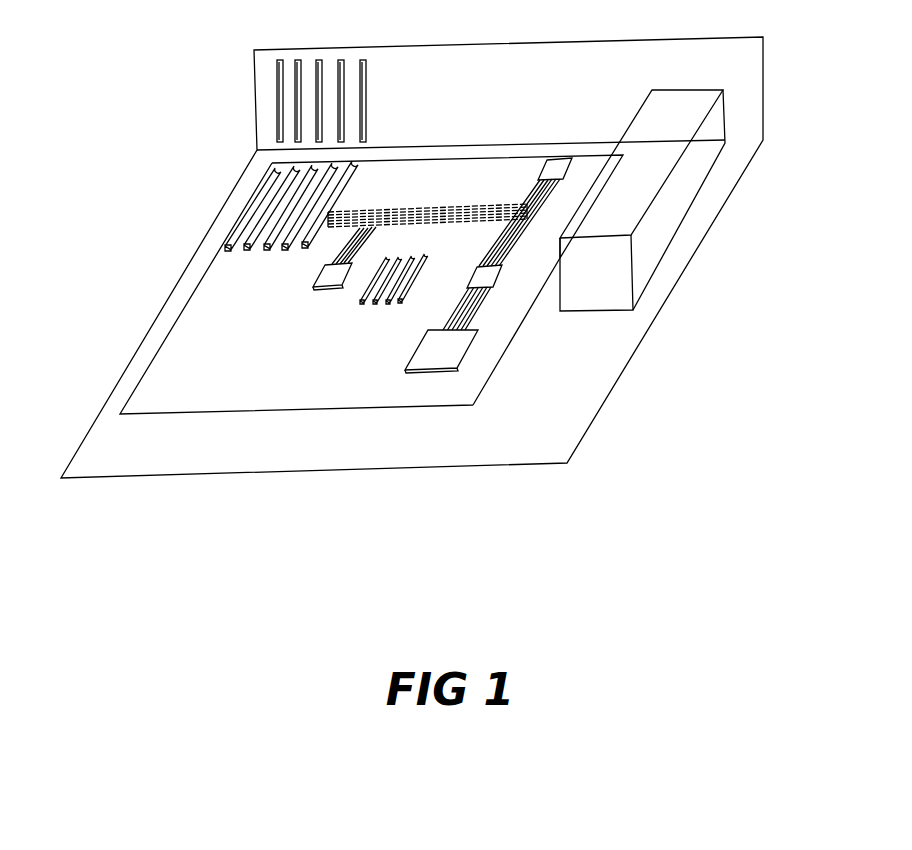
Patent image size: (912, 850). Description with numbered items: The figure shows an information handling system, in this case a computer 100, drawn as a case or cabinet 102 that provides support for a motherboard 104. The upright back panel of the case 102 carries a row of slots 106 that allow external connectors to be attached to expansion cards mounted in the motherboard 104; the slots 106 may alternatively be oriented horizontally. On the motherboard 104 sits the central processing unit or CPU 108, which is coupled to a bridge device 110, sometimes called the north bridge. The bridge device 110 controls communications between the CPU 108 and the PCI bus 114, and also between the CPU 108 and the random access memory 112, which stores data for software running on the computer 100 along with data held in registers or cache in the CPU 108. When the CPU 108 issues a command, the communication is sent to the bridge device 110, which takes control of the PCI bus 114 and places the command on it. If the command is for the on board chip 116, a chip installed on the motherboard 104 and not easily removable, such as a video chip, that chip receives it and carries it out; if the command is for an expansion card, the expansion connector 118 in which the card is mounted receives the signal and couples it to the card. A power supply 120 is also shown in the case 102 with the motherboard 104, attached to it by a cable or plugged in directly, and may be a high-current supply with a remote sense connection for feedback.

The computer 100 is at (120, 55).
The case 102 is at (747, 35).
The motherboard 104 is at (153, 357).
The slots 106 is at (281, 64).
The CPU 108 is at (465, 356).
The bridge device 110 is at (460, 291).
The random access memory 112 is at (375, 303).
The PCI bus 114 is at (400, 210).
The on board chip 116 is at (321, 287).
The expansion connector 118 is at (232, 252).
The power supply 120 is at (725, 115).